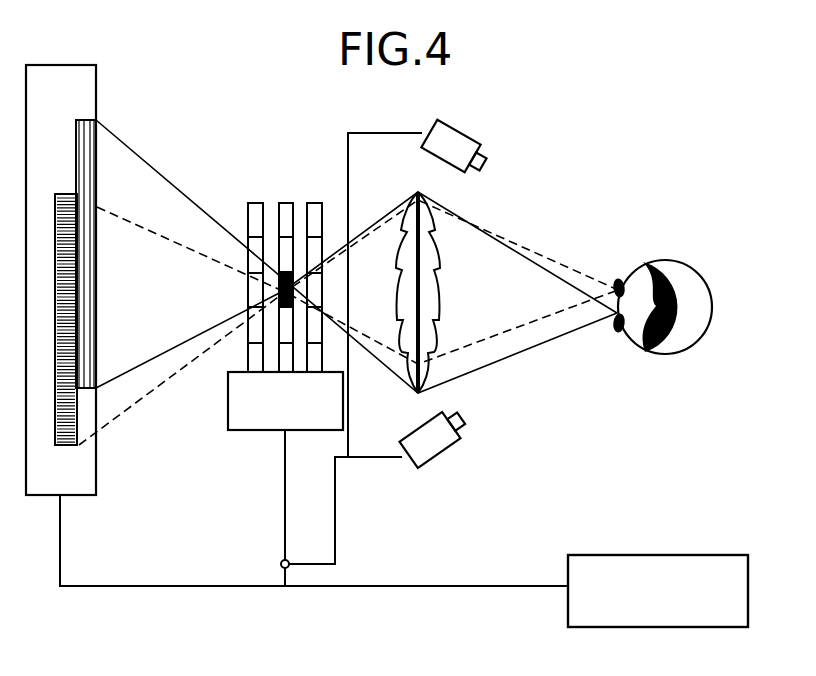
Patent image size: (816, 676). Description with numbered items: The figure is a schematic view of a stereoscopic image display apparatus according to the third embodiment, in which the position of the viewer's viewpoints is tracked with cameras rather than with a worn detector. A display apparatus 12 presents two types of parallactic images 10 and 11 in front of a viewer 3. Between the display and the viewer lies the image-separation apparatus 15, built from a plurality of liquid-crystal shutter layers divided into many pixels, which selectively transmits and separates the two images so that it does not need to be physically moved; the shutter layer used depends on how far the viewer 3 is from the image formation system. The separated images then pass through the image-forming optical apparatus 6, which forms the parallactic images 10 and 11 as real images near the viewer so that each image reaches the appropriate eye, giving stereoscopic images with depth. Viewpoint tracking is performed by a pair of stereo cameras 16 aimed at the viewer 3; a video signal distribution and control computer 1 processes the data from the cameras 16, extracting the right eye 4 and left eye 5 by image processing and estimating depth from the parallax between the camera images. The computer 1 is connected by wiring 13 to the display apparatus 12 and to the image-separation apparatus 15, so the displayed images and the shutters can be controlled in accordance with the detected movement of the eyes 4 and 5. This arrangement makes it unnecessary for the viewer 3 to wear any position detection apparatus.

The video signal distribution and control computer 1 is at (690, 555).
The viewer 3 is at (676, 257).
The right eye 4 is at (617, 280).
The left eye 5 is at (616, 334).
The image-forming optical apparatus 6 is at (437, 287).
The parallactic image 10 is at (97, 157).
The parallactic image 11 is at (75, 422).
The display apparatus 12 is at (97, 480).
The cable 13 is at (283, 520).
The image-separation apparatus 15 is at (235, 432).
The stereo cameras 16 is at (452, 122).